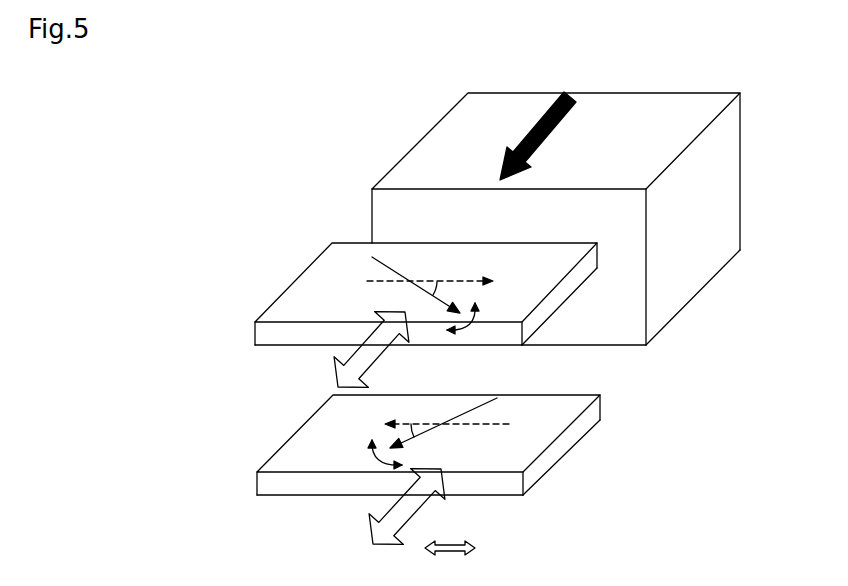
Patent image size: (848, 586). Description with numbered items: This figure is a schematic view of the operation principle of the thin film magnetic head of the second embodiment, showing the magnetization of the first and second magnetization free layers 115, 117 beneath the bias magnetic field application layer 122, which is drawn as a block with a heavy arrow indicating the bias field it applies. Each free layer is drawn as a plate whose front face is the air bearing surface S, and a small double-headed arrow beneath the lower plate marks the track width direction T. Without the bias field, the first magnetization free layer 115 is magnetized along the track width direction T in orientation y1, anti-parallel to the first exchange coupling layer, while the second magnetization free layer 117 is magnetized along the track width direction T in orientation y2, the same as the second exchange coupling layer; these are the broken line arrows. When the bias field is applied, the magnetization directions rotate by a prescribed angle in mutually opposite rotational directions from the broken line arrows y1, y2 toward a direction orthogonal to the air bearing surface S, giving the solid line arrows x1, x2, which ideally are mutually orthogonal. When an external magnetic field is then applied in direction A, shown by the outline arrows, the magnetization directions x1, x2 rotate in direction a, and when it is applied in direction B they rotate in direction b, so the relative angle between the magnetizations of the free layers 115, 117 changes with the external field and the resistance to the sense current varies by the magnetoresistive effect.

The bias magnetic field application layer 122 is at (422, 138).
The second magnetization free layer 117 is at (302, 273).
The first magnetization free layer 115 is at (303, 423).
The air bearing surface S is at (488, 337).
The track width direction T is at (450, 562).
The magnetization direction of first magnetization free layer x1 is at (430, 430).
The magnetization direction of second magnetization free layer x2 is at (395, 270).
The orientation of first magnetization free layer y1 is at (495, 423).
The orientation of second magnetization free layer y2 is at (453, 280).
The rotation direction a is at (423, 388).
The rotation direction b is at (420, 364).
The external magnetic field direction A is at (366, 453).
The external magnetic field direction B is at (389, 428).